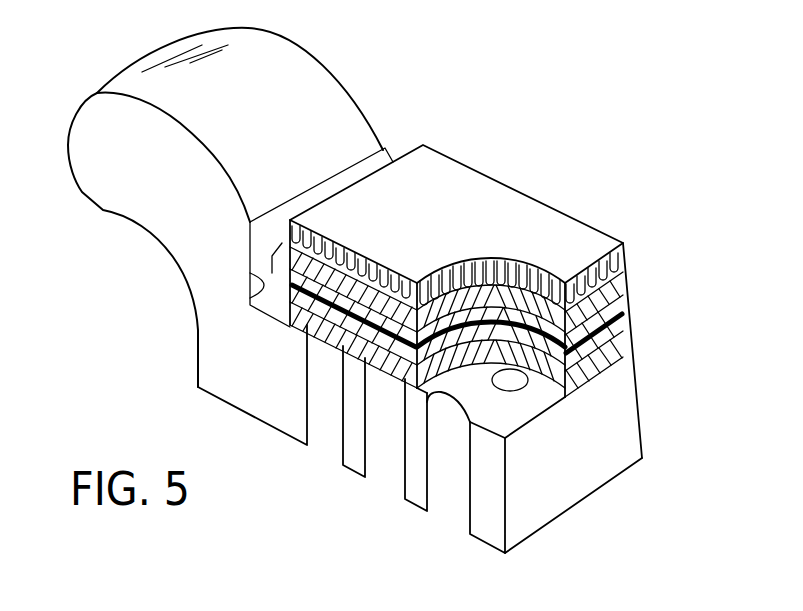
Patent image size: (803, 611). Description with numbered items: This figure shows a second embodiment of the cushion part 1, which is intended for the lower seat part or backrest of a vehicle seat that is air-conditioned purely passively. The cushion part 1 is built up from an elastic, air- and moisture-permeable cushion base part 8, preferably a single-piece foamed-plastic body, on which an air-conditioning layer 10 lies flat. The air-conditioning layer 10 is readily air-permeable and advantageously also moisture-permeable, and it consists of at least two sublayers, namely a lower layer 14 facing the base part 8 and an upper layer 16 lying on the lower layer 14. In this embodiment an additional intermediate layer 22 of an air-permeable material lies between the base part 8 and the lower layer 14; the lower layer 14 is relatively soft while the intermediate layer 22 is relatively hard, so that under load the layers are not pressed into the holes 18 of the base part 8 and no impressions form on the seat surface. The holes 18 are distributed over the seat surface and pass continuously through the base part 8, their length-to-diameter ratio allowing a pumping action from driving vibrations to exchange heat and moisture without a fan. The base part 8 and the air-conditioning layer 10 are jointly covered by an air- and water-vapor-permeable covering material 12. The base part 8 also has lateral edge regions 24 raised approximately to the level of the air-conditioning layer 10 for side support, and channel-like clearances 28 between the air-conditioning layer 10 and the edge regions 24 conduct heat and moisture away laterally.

The cushion part 1 is at (112, 245).
The cushion base part 8 is at (628, 413).
The air-conditioning layer 10 is at (250, 273).
The covering material 12 is at (620, 249).
The lower layer 14 is at (619, 317).
The upper layer 16 is at (626, 277).
The holes 18 is at (517, 383).
The intermediate layer 22 is at (622, 349).
The lateral edge regions 24 is at (180, 70).
The channel-like clearances 28 is at (371, 152).